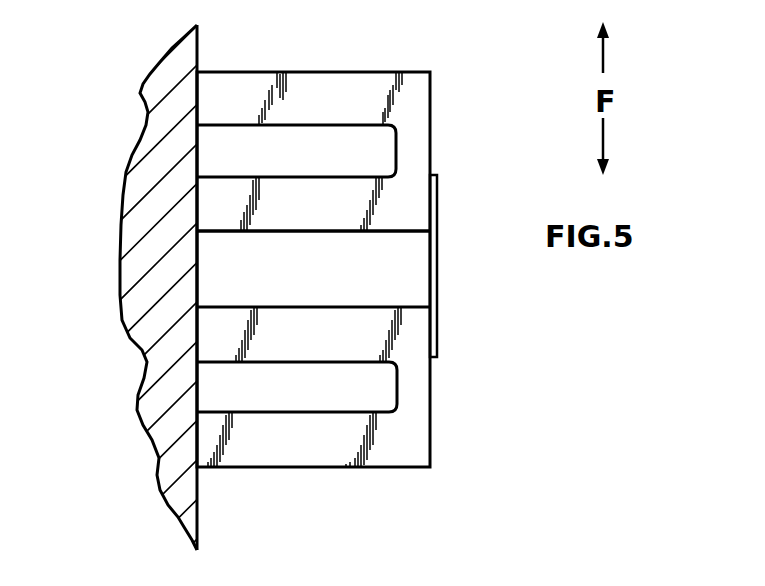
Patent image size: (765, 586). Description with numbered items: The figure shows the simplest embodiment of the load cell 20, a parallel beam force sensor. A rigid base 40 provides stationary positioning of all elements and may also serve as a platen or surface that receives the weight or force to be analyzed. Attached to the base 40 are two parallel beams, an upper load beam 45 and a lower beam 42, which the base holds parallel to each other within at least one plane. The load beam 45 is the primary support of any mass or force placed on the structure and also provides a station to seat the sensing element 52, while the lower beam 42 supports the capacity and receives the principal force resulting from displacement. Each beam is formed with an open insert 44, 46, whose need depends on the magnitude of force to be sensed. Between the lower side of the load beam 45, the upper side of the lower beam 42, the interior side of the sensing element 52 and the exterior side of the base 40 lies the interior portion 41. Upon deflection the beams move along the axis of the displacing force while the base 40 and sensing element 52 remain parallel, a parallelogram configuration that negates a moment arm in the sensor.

The load cell 20 is at (457, 76).
The base 40 is at (150, 175).
The interior portion 41 is at (319, 278).
The lower beam 42 is at (413, 389).
The open insert 44 is at (327, 392).
The load beam 45 is at (311, 85).
The open insert 46 is at (232, 143).
The sensing element 52 is at (430, 231).